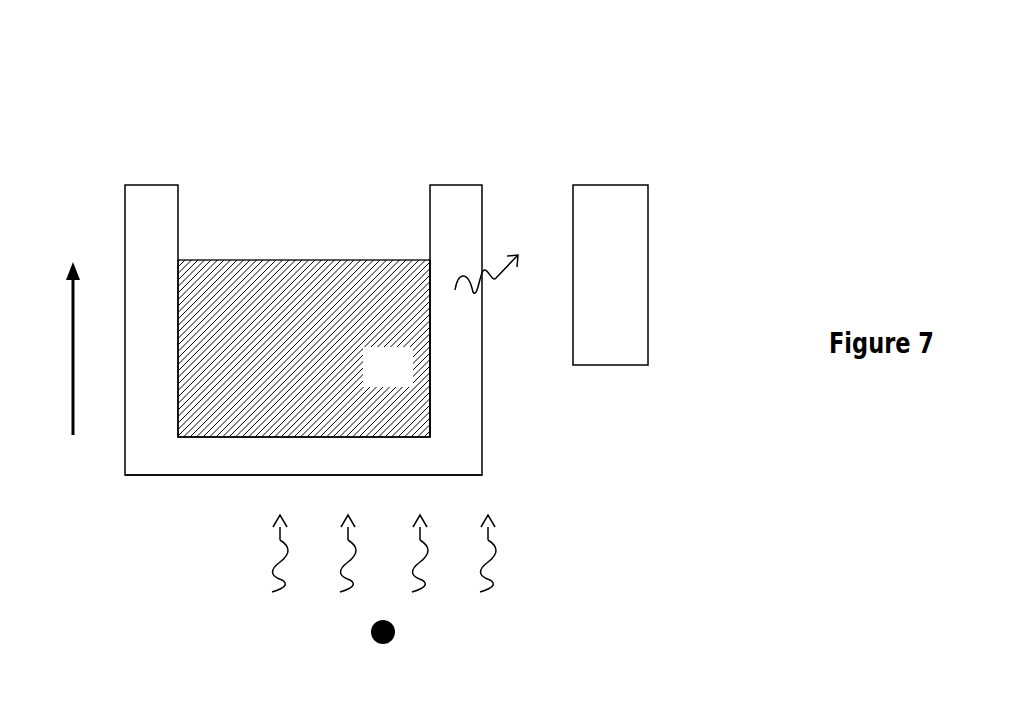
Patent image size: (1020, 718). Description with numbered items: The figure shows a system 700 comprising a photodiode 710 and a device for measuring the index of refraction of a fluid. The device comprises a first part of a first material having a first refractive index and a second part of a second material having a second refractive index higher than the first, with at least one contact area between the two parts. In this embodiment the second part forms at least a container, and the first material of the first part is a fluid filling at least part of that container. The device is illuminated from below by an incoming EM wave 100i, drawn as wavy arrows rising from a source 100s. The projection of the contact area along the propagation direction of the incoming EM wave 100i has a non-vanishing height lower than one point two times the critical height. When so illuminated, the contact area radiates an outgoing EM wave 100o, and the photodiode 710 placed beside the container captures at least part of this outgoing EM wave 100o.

The system 700 is at (723, 83).
The outgoing EM wave 100o is at (491, 247).
The incoming EM wave 100i is at (535, 558).
The light source 100s is at (400, 632).
The photodiode 710 is at (635, 287).